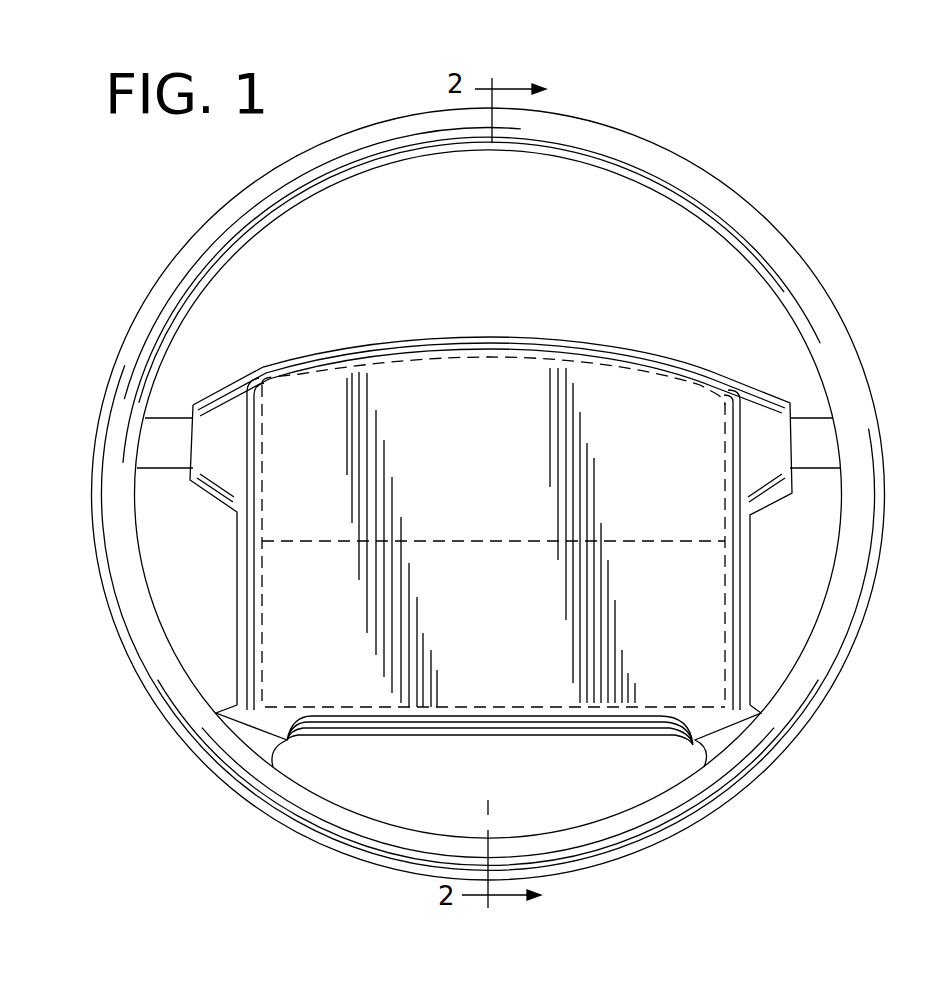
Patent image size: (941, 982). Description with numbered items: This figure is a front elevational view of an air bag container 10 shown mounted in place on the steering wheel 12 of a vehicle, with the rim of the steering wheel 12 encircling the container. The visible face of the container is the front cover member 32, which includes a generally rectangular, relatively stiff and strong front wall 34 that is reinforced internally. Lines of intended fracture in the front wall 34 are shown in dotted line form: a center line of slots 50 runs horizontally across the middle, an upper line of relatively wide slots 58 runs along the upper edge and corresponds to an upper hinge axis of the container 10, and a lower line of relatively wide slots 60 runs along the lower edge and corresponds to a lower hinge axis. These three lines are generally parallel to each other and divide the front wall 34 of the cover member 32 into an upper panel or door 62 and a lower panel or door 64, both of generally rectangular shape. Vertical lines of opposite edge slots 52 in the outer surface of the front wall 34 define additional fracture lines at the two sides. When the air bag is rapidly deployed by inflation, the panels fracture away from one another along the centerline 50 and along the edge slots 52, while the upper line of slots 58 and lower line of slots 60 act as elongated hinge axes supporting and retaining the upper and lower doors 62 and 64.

The air bag container 10 is at (519, 335).
The steering wheel 12 is at (740, 188).
The front cover member 32 is at (430, 742).
The front wall 34 is at (530, 535).
The center line of slots 50 is at (458, 540).
The opposite edge slots 52 is at (266, 628).
The upper edge slots 58 is at (398, 368).
The lower edge slots 60 is at (373, 706).
The upper panel or door 62 is at (657, 463).
The lower panel or door 64 is at (549, 650).